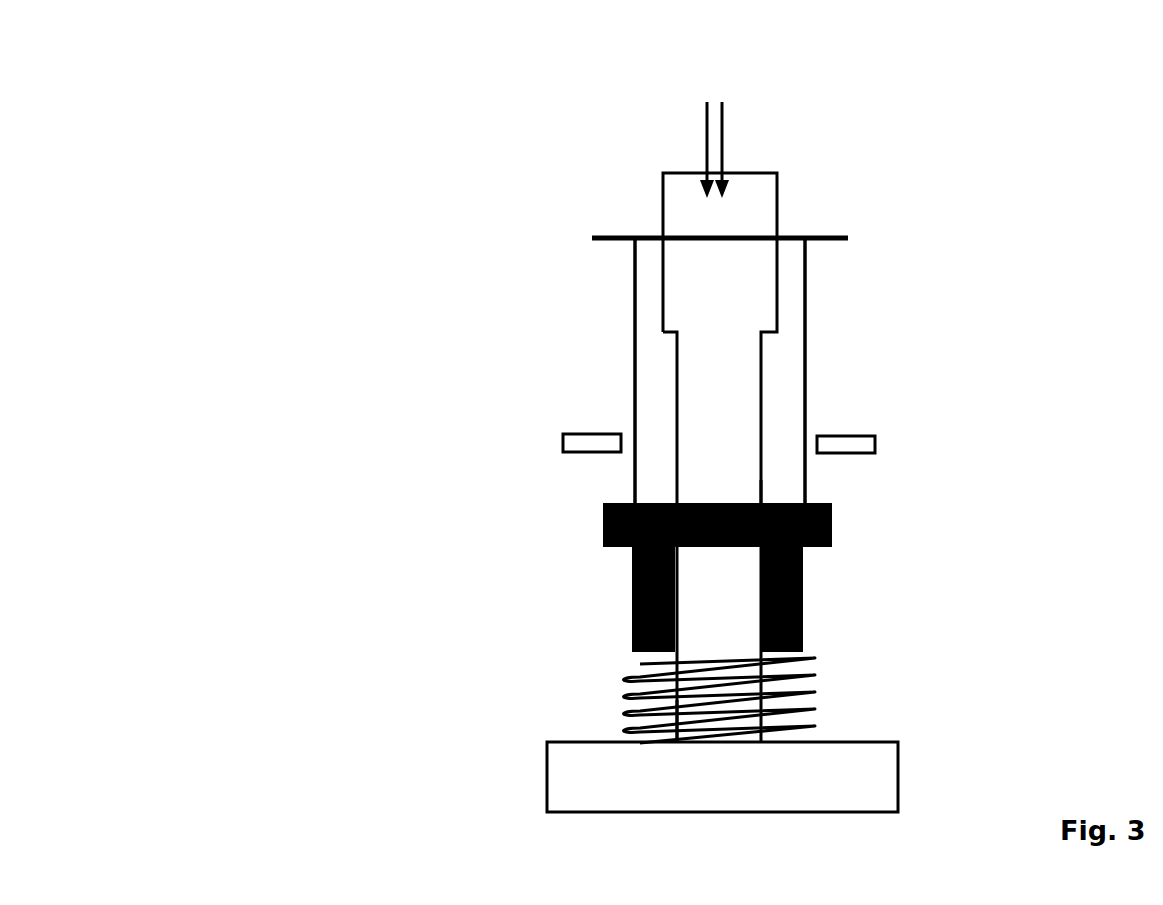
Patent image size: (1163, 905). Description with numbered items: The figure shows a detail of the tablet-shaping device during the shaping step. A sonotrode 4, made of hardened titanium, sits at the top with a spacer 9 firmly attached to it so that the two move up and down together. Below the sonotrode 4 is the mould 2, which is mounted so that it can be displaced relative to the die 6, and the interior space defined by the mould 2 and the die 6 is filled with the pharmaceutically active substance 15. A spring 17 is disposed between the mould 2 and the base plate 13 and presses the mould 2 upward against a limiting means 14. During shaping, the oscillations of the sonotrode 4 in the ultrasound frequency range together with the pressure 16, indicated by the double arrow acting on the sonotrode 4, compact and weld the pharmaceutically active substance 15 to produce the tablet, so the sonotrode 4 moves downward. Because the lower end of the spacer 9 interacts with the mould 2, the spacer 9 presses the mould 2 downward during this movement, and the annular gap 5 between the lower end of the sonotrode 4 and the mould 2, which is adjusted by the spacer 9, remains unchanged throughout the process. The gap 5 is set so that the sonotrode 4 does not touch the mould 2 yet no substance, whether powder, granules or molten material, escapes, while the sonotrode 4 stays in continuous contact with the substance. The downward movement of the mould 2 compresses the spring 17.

The mould 2 is at (632, 600).
The sonotrode 4 is at (687, 203).
The annular gap 5 is at (776, 489).
The die 6 is at (690, 724).
The spacer 9 is at (640, 355).
The base plate 13 is at (592, 778).
The limiting means 14 is at (563, 432).
The pharmaceutically active substance 15 is at (603, 503).
The pressure 16 is at (712, 131).
The spring 17 is at (640, 660).